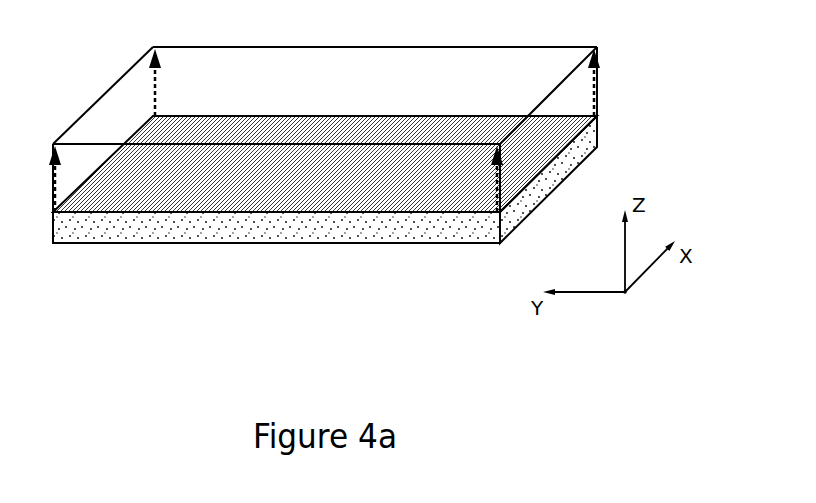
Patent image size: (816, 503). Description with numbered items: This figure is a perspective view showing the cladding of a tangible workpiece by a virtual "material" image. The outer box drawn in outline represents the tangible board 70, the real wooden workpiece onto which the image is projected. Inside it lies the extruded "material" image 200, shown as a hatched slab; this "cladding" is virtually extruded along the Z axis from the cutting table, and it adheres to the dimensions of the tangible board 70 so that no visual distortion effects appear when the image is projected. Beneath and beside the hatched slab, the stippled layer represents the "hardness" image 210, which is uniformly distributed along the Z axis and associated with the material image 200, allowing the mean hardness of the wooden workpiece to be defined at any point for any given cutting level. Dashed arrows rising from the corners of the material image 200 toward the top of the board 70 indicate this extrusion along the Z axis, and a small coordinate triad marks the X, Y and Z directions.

The tangible board 70 is at (449, 36).
The material image 200 is at (199, 194).
The hardness image 210 is at (366, 234).